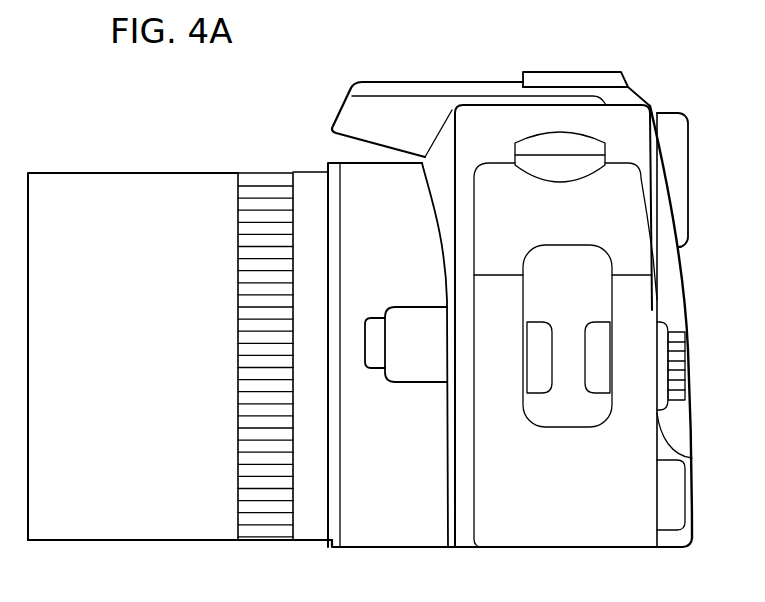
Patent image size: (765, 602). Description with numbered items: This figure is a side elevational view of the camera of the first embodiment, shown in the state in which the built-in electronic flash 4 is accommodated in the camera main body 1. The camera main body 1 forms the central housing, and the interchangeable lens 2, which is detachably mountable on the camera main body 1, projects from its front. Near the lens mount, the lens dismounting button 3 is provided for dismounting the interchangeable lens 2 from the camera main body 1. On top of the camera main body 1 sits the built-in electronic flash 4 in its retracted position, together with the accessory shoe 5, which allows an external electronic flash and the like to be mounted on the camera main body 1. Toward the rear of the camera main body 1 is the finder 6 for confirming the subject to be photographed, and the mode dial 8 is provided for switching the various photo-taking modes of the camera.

The camera main body 1 is at (642, 95).
The interchangeable lens 2 is at (104, 173).
The lens dismounting button 3 is at (378, 362).
The built-in electronic flash 4 is at (395, 80).
The accessory shoe 5 is at (563, 72).
The finder 6 is at (690, 172).
The mode dial 8 is at (687, 367).